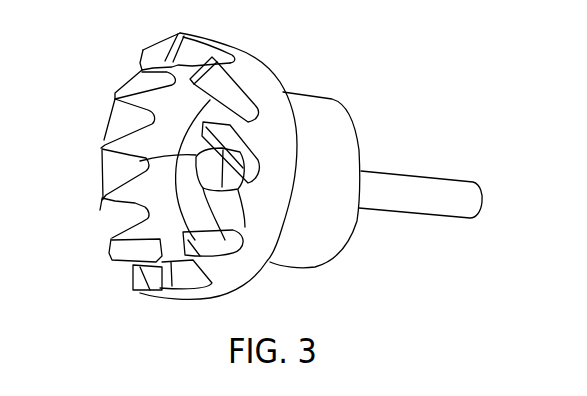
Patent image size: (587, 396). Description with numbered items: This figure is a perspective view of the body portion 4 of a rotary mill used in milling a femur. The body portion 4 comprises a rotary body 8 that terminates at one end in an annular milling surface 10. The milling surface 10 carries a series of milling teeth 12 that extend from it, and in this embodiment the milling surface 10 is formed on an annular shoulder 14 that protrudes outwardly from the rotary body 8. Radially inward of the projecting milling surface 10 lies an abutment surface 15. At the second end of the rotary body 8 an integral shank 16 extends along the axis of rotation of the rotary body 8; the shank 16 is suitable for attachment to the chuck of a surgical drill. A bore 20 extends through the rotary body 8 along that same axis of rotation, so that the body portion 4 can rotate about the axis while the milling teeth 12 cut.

The body portion 4 is at (303, 63).
The rotary body 8 is at (337, 100).
The annular milling surface 10 is at (114, 98).
The milling teeth 12 is at (132, 279).
The annular shoulder 14 is at (262, 60).
The abutment surface 15 is at (193, 208).
The shank 16 is at (437, 173).
The bore 20 is at (140, 161).